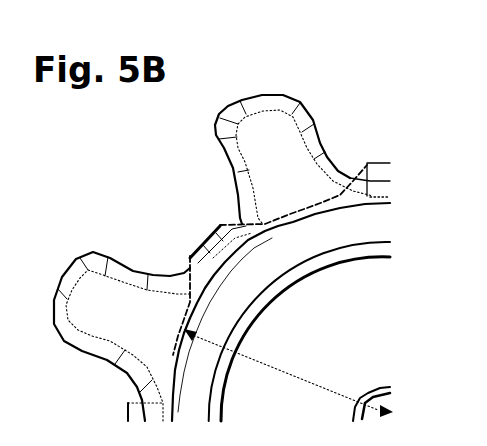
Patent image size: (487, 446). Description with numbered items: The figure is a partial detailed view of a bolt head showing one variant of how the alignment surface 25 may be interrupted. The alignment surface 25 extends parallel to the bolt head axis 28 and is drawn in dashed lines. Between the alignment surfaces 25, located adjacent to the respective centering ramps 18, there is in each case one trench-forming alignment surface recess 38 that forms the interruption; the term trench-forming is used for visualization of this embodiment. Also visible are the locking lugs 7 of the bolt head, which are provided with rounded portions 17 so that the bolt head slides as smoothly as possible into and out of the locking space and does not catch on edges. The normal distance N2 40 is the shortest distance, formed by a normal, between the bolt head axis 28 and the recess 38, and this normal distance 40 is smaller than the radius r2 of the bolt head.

The locking lug 7 is at (283, 138).
The rounded portion 17 is at (249, 108).
The centering ramp 18 is at (204, 222).
The alignment surface 25 is at (190, 245).
The trench-forming alignment surface recess 38 is at (170, 353).
The normal distance N2 40 is at (323, 383).
The bolt head axis 28 is at (393, 411).